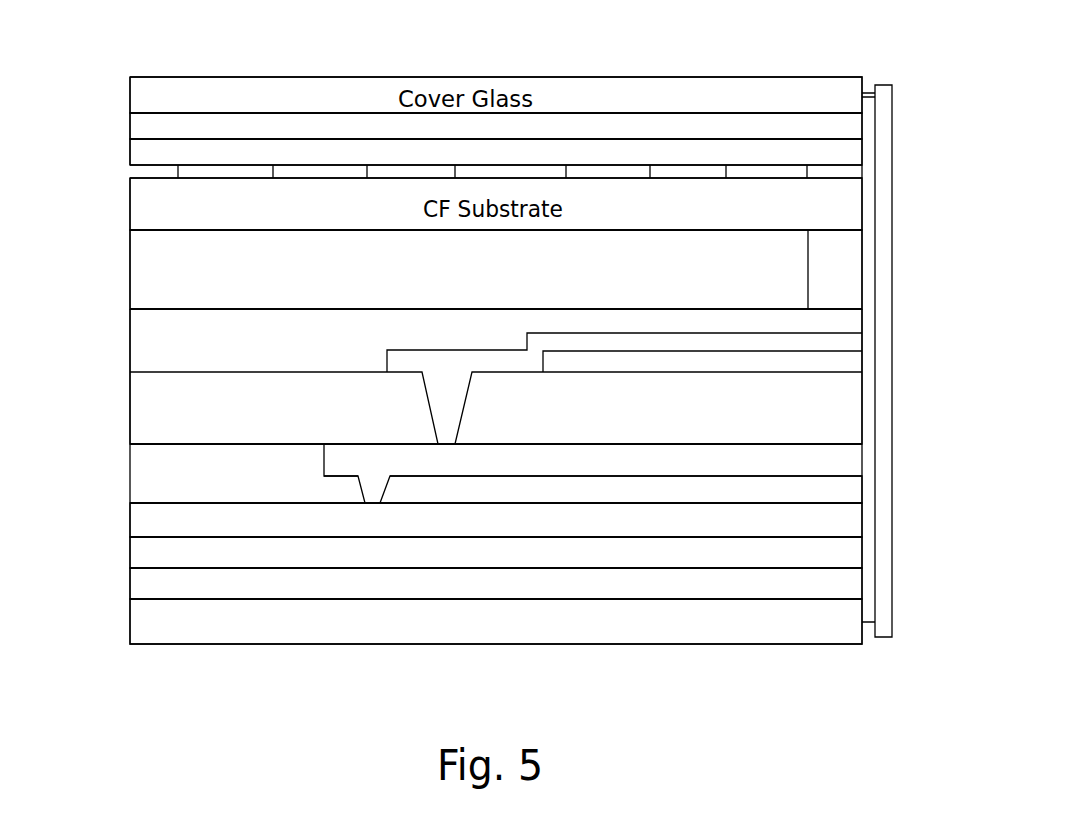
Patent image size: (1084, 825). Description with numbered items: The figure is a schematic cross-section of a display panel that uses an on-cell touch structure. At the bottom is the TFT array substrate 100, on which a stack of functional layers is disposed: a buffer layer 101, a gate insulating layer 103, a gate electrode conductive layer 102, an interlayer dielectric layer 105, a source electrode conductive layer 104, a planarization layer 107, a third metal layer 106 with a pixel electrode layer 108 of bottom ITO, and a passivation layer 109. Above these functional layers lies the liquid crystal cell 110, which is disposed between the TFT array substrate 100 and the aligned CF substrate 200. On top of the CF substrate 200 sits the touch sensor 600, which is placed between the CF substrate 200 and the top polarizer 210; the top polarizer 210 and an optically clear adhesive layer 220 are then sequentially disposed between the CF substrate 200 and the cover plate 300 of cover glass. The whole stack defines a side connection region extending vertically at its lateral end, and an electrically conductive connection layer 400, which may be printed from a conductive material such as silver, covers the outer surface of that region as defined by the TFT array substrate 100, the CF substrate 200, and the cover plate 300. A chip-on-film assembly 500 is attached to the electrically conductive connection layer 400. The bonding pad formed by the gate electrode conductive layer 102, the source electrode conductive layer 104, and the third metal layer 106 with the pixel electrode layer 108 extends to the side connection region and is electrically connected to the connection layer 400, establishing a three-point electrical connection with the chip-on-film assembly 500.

The TFT array substrate 100 is at (310, 625).
The buffer layer 101 is at (278, 583).
The gate electrode conductive layer 102 is at (613, 527).
The gate insulating layer 103 is at (203, 550).
The source electrode conductive layer 104 is at (713, 463).
The interlayer dielectric layer 105 is at (170, 473).
The third metal layer 106 is at (808, 342).
The planarization layer 107 is at (170, 403).
The pixel electrode layer 108 is at (808, 365).
The passivation layer 109 is at (170, 341).
The liquid crystal cell 110 is at (170, 271).
The CF substrate 200 is at (145, 188).
The top polarizer 210 is at (597, 150).
The optically clear adhesive layer 220 is at (540, 128).
The cover plate 300 is at (307, 102).
The electrically conductive connection layer 400 is at (868, 580).
The chip-on-film assembly 500 is at (883, 585).
The touch sensor 600 is at (742, 170).